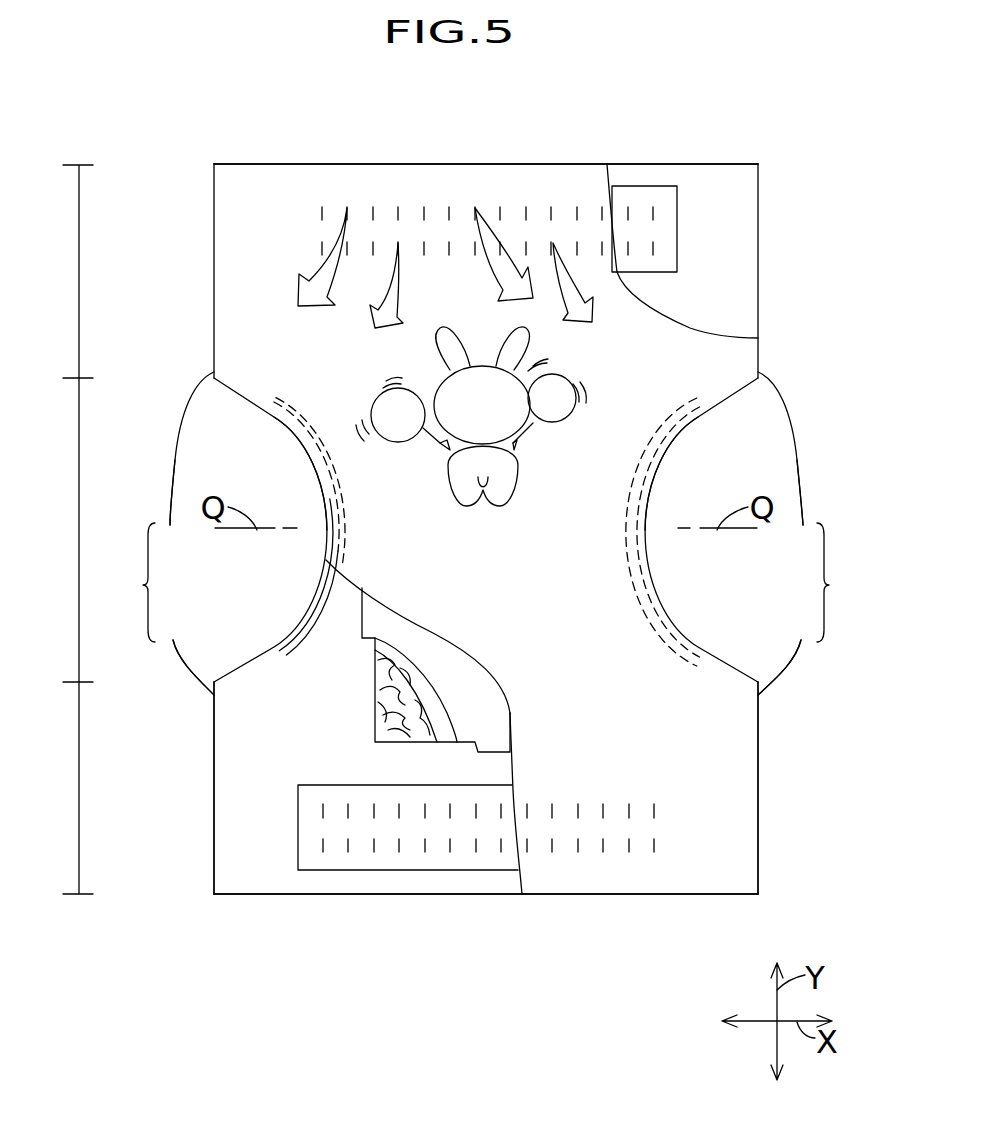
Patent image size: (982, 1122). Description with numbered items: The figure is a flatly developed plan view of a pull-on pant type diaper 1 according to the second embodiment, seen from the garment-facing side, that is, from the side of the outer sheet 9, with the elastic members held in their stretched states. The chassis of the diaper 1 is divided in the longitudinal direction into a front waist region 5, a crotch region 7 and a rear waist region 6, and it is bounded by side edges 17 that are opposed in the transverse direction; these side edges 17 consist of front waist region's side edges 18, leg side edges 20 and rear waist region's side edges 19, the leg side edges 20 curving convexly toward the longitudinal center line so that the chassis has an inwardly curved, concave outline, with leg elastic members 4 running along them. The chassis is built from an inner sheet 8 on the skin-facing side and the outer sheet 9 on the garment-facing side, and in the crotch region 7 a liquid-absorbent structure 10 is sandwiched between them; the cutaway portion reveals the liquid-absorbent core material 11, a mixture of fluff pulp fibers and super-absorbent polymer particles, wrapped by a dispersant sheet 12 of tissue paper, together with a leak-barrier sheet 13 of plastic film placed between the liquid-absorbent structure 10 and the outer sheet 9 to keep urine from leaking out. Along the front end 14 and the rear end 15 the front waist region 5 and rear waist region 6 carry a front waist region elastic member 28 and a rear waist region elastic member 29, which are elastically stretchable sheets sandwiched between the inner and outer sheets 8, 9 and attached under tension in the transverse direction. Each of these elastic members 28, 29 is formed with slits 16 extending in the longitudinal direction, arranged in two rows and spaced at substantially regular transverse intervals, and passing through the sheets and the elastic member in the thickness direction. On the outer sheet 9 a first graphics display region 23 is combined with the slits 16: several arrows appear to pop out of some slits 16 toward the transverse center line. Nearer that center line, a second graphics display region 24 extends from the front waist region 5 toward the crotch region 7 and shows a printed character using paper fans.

The diaper 1 is at (728, 133).
The leg elastic members 4 is at (297, 626).
The front waist region 5 is at (79, 275).
The rear waist region 6 is at (79, 785).
The crotch region 7 is at (79, 518).
The inner sheet 8 is at (243, 766).
The outer sheet 9 is at (740, 766).
The liquid-absorbent structure 10 is at (419, 727).
The liquid-absorbent core material 11 is at (392, 707).
The dispersant sheet 12 is at (403, 660).
The leak-barrier sheet 13 is at (380, 622).
The front end 14 is at (432, 164).
The rear end 15 is at (412, 894).
The slits 16 is at (653, 212).
The side edges 17 is at (486, 533).
The front waist region's side edges 18 is at (486, 509).
The rear waist region's side edges 19 is at (486, 651).
The leg side edges 20 is at (310, 590).
The first graphics display region 23 is at (298, 291).
The second graphics display region 24 is at (563, 443).
The front waist region elastic member 28 is at (691, 258).
The rear waist region elastic member 29 is at (344, 884).